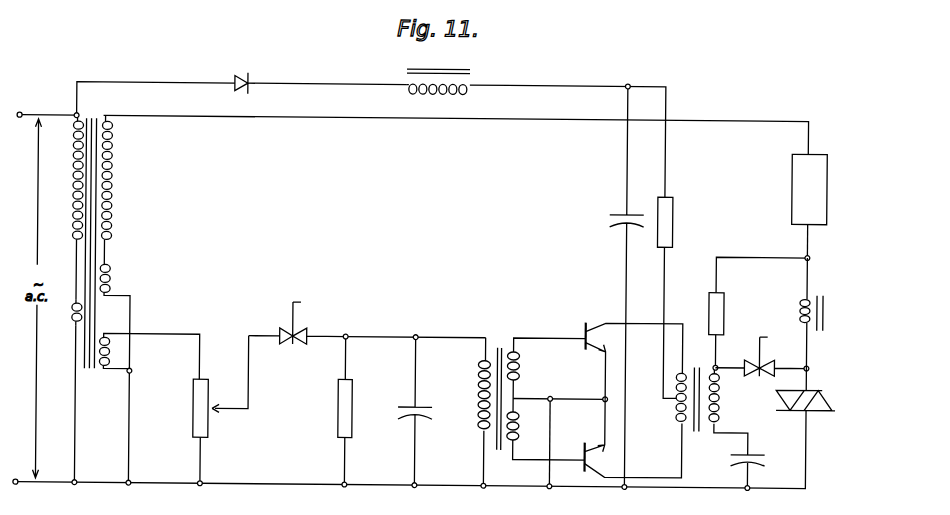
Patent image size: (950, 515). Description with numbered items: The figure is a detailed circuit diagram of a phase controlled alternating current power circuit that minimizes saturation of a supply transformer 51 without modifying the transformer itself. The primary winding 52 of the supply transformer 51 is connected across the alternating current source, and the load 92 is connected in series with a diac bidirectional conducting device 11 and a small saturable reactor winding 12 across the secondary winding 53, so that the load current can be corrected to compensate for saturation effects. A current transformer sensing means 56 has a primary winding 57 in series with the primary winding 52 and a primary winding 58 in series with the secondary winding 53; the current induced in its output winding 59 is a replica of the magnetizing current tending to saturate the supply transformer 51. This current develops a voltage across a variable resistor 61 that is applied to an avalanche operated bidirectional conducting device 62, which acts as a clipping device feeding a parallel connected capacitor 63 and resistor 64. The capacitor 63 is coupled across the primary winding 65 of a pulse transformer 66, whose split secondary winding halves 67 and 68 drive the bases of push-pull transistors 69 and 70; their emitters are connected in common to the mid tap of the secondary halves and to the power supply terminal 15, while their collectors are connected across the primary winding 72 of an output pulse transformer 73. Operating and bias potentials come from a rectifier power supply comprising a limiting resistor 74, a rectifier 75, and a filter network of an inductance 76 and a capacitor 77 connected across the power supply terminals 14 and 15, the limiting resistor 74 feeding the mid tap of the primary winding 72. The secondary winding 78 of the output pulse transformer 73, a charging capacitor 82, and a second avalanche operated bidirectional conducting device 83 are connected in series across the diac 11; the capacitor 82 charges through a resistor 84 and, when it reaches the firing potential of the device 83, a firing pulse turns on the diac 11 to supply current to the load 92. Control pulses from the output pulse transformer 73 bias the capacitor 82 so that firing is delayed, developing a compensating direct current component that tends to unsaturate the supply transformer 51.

The diac bidirectional conducting device 11 is at (818, 413).
The small saturable reactor winding 12 is at (803, 304).
The alternating current power supply terminal 14 is at (53, 113).
The alternating current power supply terminal 15 is at (60, 488).
The supply transformer 51 is at (105, 107).
The primary winding 52 is at (70, 175).
The secondary winding 53 is at (113, 196).
The current transformer sensing means 56 is at (99, 398).
The primary winding 57 is at (72, 322).
The primary winding 58 is at (112, 284).
The output winding 59 is at (149, 344).
The variable resistor 61 is at (193, 425).
The avalanche operated conductivity controlled bidirectional conducting device 62 is at (297, 348).
The capacitor 63 is at (422, 406).
The resistor 64 is at (338, 403).
The primary winding 65 is at (478, 403).
The pulse transformer 66 is at (511, 335).
The secondary winding half 67 is at (522, 378).
The secondary winding half 68 is at (524, 428).
The NPN junction transistor 69 is at (585, 325).
The amplifying circuit means transistor 70 is at (583, 449).
The primary winding 72 is at (676, 420).
The output pulse transformer 73 is at (707, 456).
The limiting resistor 74 is at (671, 220).
The rectifier 75 is at (238, 75).
The inductance 76 is at (470, 85).
The capacitor 77 is at (618, 216).
The secondary winding 78 is at (721, 420).
The charging capacitor 82 is at (756, 456).
The avalanche operated bidirectional conducting device 83 is at (762, 380).
The resistor 84 is at (714, 312).
The load 92 is at (791, 187).